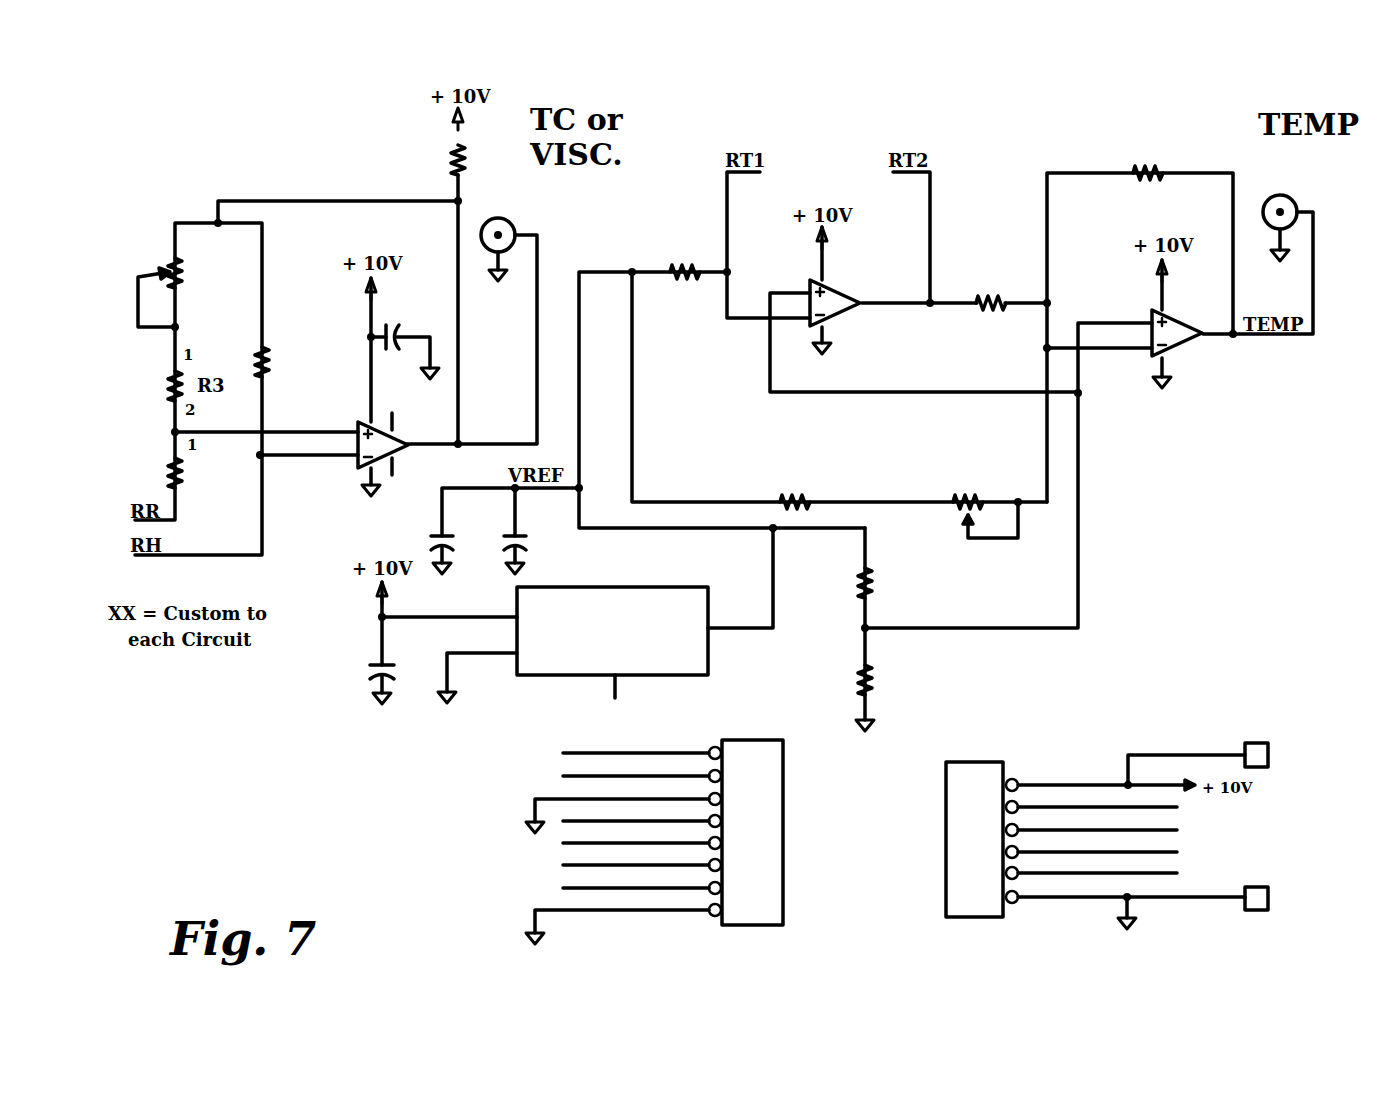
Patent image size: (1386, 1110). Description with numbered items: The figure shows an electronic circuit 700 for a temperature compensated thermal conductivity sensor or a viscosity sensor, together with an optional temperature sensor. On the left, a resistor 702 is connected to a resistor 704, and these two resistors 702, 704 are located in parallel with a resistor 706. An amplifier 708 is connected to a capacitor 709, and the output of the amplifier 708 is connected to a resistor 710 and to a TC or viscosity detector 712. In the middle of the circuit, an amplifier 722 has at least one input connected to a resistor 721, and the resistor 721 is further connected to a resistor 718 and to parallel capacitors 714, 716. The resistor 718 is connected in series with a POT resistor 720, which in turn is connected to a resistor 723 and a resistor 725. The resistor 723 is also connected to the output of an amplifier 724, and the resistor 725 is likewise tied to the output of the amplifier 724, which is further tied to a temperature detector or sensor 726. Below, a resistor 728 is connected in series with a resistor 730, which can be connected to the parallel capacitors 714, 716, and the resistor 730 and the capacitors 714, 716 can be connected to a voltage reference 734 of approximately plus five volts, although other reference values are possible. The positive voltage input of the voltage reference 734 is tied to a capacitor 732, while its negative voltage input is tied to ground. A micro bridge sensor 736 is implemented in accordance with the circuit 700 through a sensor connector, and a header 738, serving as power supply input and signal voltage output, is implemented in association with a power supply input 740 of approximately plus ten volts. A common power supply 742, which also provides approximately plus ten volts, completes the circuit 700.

The electronic circuit 700 is at (193, 152).
The resistor 702 is at (177, 263).
The resistor 704 is at (172, 465).
The resistor 706 is at (262, 358).
The amplifier 708 is at (354, 462).
The capacitor 709 is at (369, 333).
The resistor 710 is at (452, 160).
The TC or viscosity detector 712 is at (545, 255).
The capacitor 714 is at (432, 547).
The capacitor 716 is at (504, 537).
The resistor 718 is at (780, 498).
The POT resistor 720 is at (953, 498).
The resistor 721 is at (683, 283).
The amplifier 722 is at (840, 287).
The resistor 723 is at (975, 320).
The amplifier 724 is at (1187, 345).
The resistor 725 is at (1135, 180).
The temperature detector or sensor 726 is at (1298, 218).
The resistor 728 is at (860, 677).
The resistor 730 is at (860, 583).
The capacitor 732 is at (373, 667).
The voltage reference 734 is at (642, 587).
The micro bridge sensor 736 is at (495, 833).
The header 738 is at (930, 832).
The power supply input 740 is at (1245, 745).
The common power supply 742 is at (1253, 887).